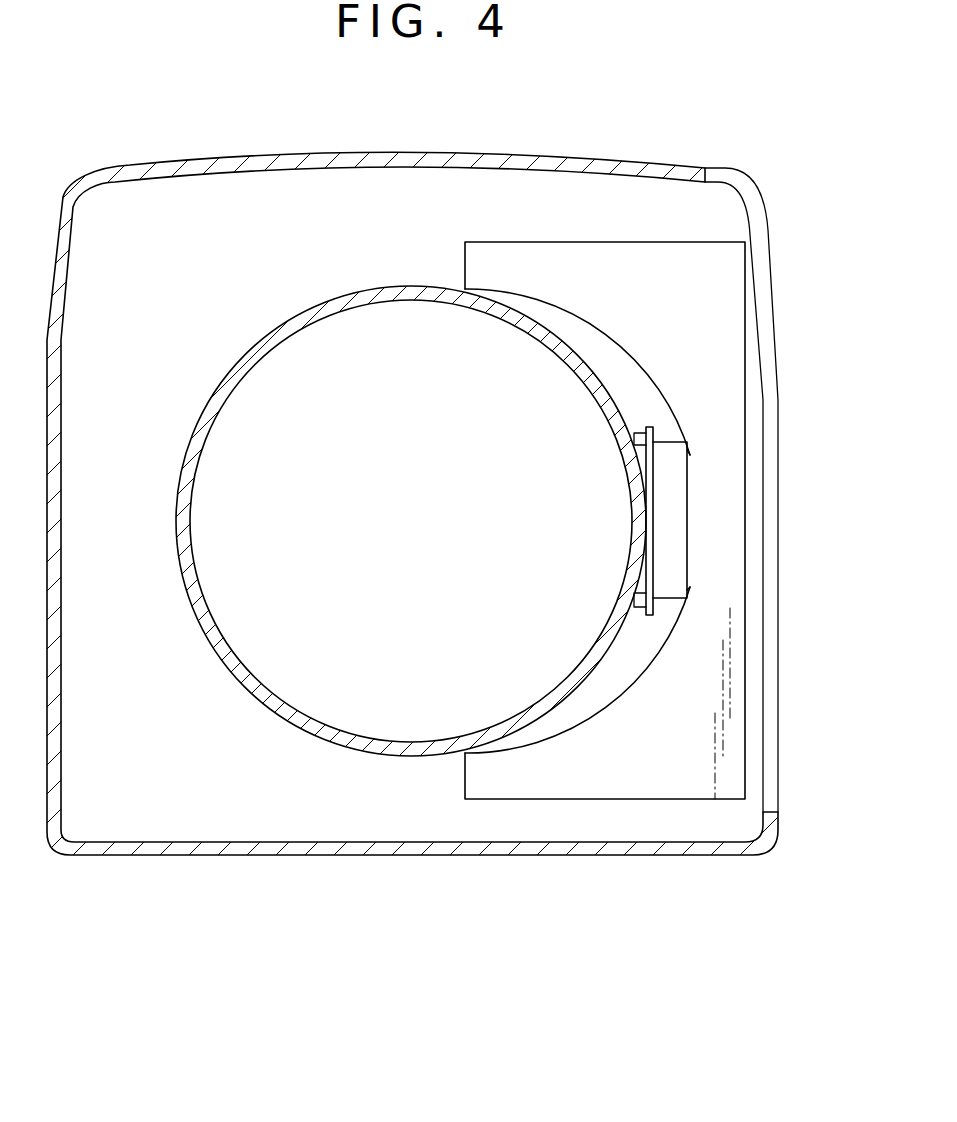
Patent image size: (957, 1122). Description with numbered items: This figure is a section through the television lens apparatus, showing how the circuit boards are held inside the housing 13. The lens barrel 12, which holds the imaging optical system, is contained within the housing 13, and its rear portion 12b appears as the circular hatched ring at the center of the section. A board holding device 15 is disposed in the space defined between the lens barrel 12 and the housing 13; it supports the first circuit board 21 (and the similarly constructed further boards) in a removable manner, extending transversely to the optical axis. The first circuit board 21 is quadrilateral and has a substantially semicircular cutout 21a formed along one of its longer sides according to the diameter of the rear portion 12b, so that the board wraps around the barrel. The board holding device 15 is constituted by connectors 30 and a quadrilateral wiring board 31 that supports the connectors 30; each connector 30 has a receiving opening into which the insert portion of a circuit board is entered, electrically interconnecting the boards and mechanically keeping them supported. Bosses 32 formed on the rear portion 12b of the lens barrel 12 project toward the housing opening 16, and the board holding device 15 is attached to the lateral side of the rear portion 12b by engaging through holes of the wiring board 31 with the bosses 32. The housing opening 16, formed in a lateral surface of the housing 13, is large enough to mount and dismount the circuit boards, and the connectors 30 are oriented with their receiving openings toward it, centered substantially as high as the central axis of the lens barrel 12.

The lens barrel 12 is at (313, 280).
The rear portion 12b is at (272, 331).
The housing 13 is at (462, 146).
The board holding device 15 is at (641, 642).
The housing opening 16 is at (770, 733).
The first circuit board 21 is at (752, 353).
The semicircular cutout 21a is at (647, 400).
The connector 30 is at (672, 523).
The wiring board 31 is at (653, 432).
The boss 32 is at (640, 432).